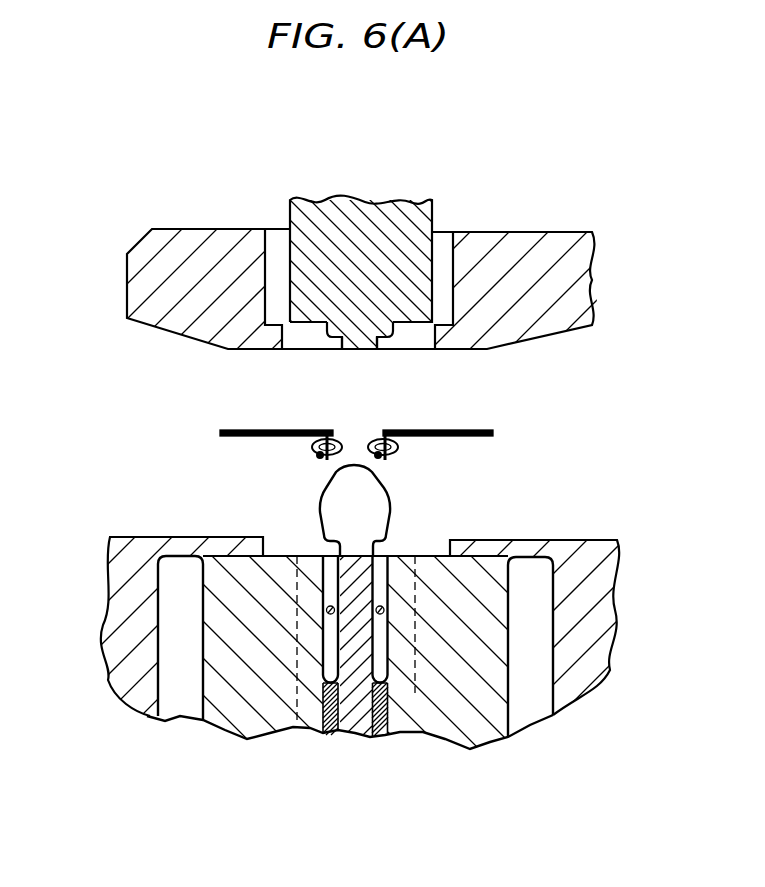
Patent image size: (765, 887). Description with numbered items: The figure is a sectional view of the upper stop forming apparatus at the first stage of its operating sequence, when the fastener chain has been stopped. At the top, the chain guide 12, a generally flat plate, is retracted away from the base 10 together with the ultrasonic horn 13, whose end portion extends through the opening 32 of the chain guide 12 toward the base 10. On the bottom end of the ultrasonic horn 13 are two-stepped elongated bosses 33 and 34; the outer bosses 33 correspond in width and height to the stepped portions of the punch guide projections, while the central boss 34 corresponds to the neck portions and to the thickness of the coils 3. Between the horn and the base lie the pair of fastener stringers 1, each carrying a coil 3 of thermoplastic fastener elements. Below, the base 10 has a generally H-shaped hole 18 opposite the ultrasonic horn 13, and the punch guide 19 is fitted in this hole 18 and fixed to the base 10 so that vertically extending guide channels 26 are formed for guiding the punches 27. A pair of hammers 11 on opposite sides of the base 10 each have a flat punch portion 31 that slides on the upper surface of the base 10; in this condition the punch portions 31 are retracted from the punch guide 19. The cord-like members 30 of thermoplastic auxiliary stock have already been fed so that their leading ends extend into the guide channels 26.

The fastener stringer 1 is at (256, 422).
The coil 3 is at (340, 438).
The base 10 is at (252, 713).
The hammer 11 is at (138, 665).
The chain guide 12 is at (532, 242).
The ultrasonic horn 13 is at (370, 208).
The hole 18 is at (415, 693).
The punch guide 19 is at (400, 502).
The guide channel 26 is at (328, 573).
The punch 27 is at (330, 727).
The cord-like member 30 is at (327, 612).
The punch portion 31 is at (222, 540).
The opening 32 is at (448, 244).
The elongated boss 33 is at (333, 330).
The elongated boss 34 is at (361, 340).